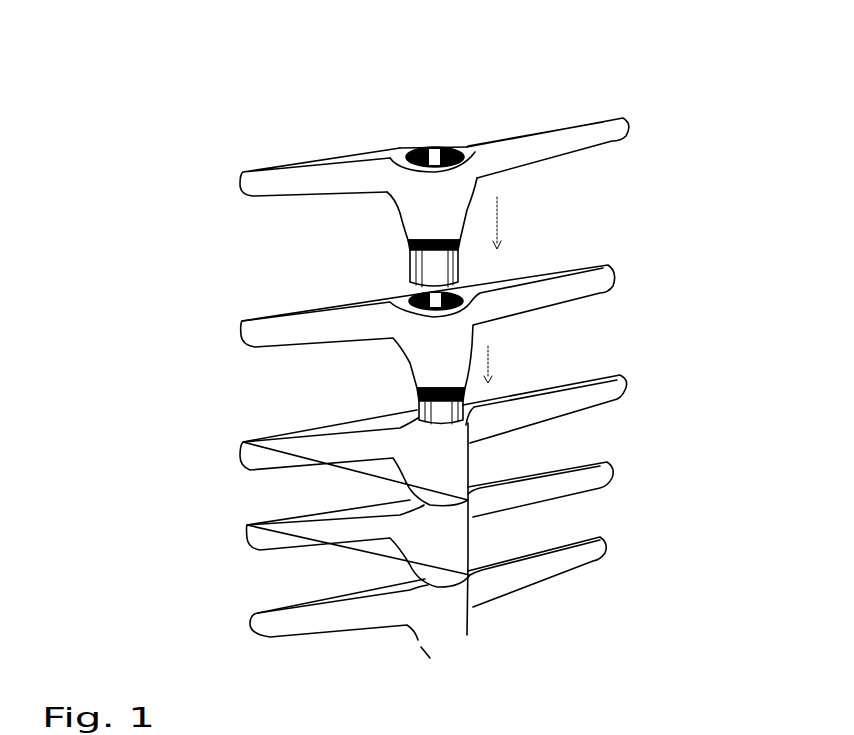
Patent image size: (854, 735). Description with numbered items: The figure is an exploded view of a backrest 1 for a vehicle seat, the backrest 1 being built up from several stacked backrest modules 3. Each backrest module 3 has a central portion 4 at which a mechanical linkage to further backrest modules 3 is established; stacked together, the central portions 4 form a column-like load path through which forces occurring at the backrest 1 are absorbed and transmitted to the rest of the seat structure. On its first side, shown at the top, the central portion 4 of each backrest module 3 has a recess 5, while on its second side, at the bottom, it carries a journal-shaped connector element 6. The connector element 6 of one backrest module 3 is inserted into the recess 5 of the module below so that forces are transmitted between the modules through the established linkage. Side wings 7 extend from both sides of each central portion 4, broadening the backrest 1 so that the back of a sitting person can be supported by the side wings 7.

The backrest 1 is at (131, 585).
The backrest module 3 is at (662, 188).
The central portion 4 is at (453, 218).
The recess 5 is at (427, 147).
The journal-shaped connector element 6 is at (433, 272).
The side wing 7 is at (277, 187).